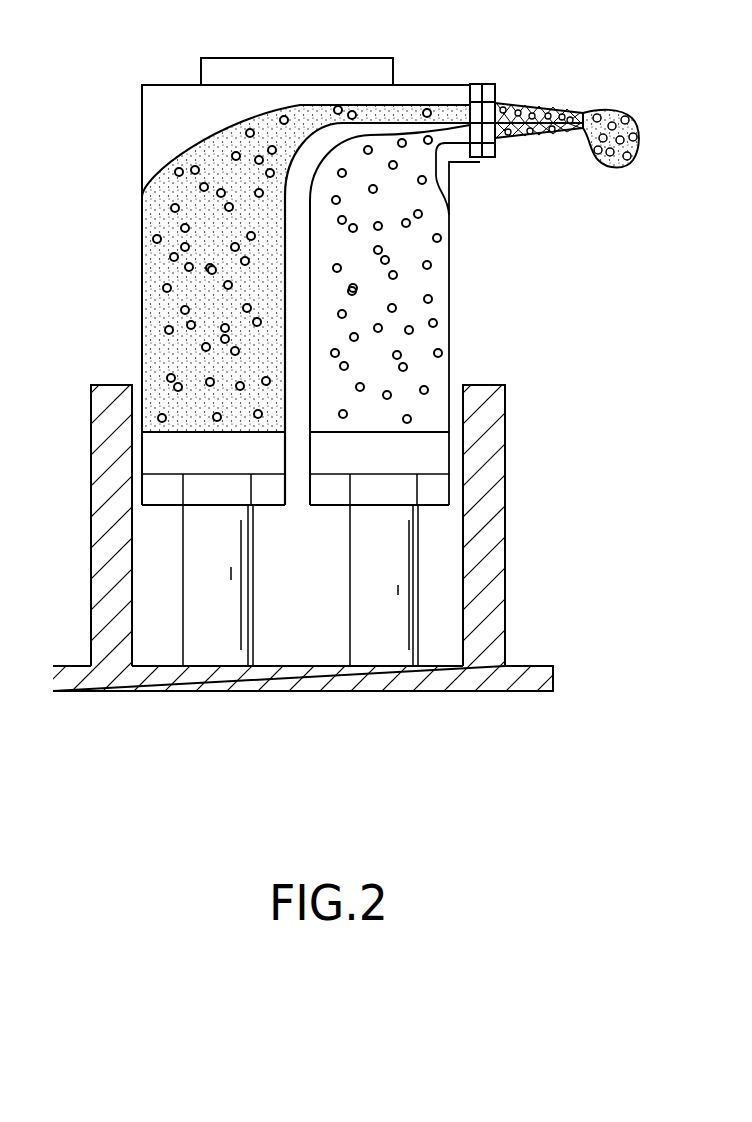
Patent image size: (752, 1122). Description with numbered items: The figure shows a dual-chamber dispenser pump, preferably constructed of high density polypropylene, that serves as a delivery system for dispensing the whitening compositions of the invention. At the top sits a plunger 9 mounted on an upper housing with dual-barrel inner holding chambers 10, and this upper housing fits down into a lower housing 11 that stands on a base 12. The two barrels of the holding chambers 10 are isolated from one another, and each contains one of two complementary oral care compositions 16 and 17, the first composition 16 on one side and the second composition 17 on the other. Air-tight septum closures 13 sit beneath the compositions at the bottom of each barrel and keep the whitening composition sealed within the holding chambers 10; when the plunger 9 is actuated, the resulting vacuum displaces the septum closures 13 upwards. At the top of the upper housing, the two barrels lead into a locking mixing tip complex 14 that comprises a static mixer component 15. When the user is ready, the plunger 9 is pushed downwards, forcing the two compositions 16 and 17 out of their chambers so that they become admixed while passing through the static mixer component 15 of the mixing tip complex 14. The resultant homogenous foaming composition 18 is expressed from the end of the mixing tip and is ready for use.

The plunger 9 is at (386, 74).
The upper housing with dual-barrel inner holding chambers 10 is at (157, 118).
The lower housing 11 is at (504, 452).
The base 12 is at (543, 678).
The air-tight septum closures 13 is at (158, 447).
The locking mixing tip complex 14 is at (487, 92).
The static mixer component 15 is at (512, 140).
The oral care composition 16 is at (152, 221).
The oral care composition 17 is at (442, 297).
The homogenous foaming composition 18 is at (620, 167).